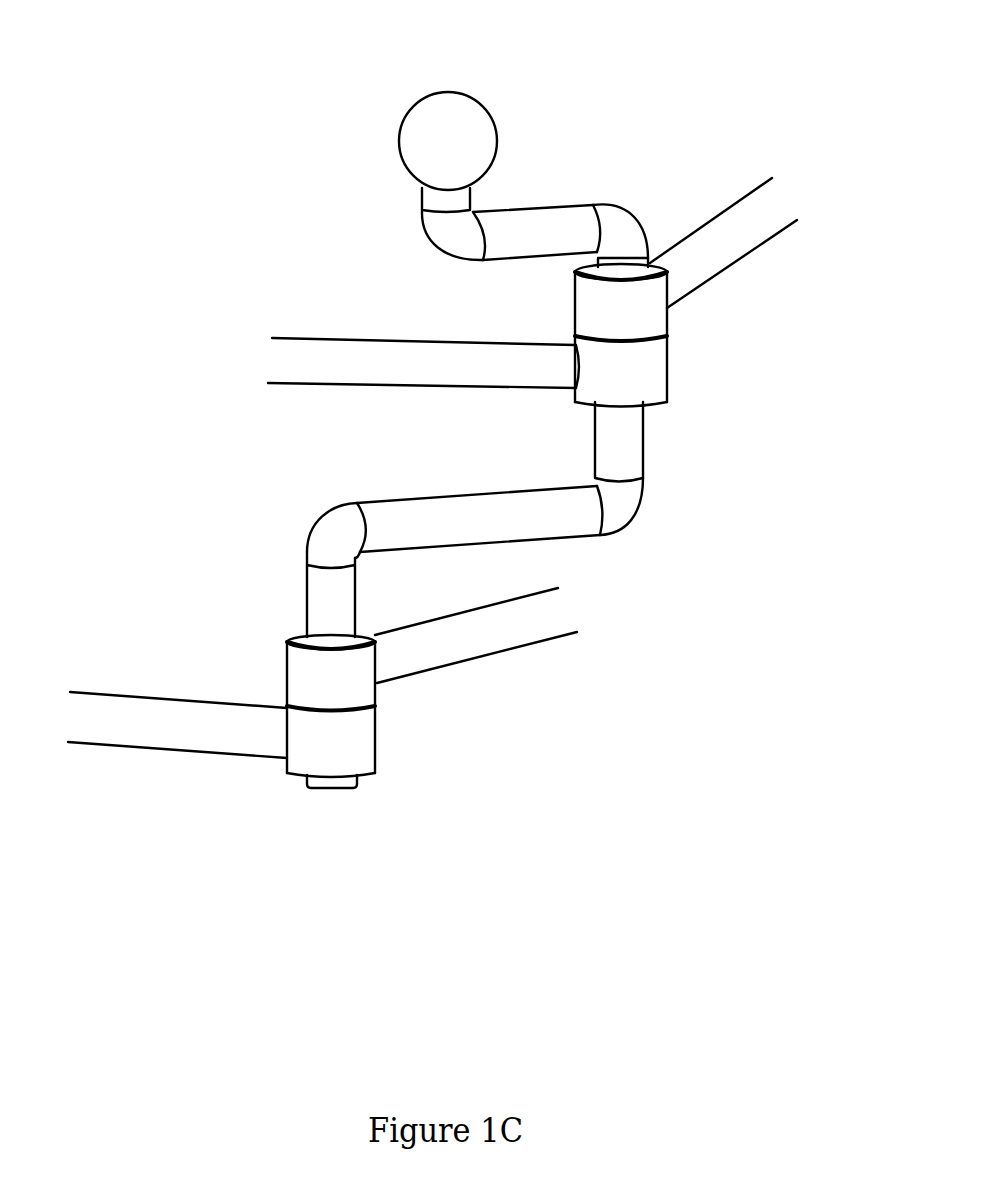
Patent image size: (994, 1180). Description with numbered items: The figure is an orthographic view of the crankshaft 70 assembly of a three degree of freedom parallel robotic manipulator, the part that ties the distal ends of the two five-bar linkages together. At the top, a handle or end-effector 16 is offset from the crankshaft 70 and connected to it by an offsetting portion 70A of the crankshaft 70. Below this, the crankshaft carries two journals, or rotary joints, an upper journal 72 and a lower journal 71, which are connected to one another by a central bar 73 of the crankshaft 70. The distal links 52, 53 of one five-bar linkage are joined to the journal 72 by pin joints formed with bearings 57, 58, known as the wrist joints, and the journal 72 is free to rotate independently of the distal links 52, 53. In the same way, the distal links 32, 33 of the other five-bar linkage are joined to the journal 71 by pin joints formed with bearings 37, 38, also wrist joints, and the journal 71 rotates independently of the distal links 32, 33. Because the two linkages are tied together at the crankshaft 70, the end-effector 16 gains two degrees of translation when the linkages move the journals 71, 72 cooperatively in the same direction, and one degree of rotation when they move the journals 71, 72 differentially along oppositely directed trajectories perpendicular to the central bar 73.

The crankshaft 70 is at (295, 203).
The offsetting portion 70A is at (545, 225).
The end-effector 16 is at (475, 132).
The distal link 52 is at (378, 358).
The distal link 53 is at (730, 243).
The bearing 57 is at (647, 312).
The bearing 58 is at (647, 372).
The journal 72 is at (622, 437).
The central bar 73 is at (508, 517).
The journal 71 is at (325, 612).
The distal link 33 is at (515, 633).
The bearing 37 is at (352, 683).
The bearing 38 is at (360, 747).
The distal link 32 is at (177, 738).